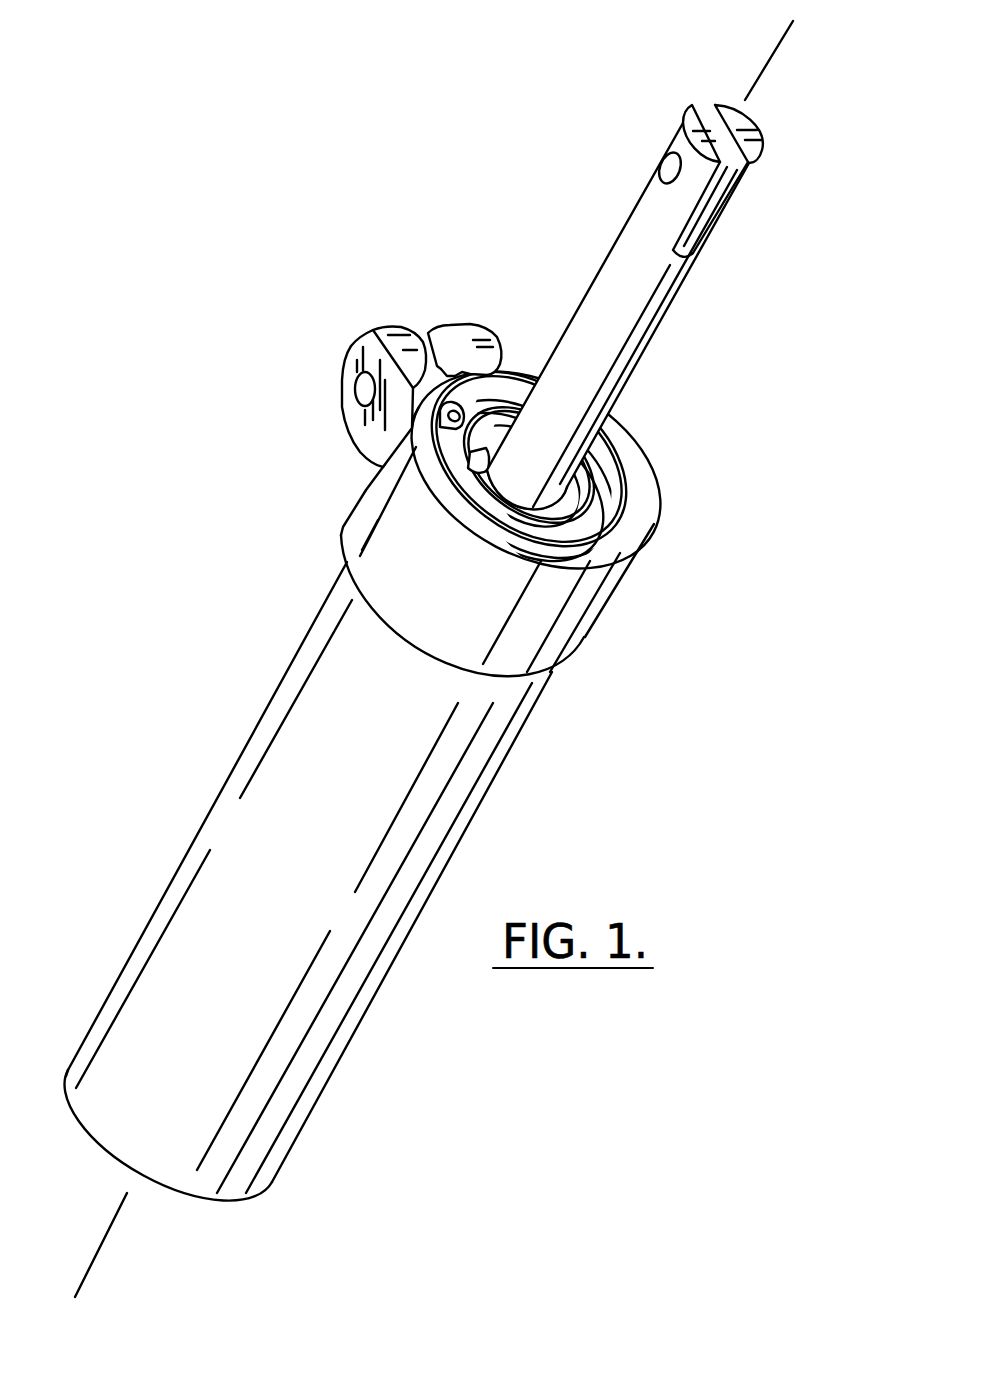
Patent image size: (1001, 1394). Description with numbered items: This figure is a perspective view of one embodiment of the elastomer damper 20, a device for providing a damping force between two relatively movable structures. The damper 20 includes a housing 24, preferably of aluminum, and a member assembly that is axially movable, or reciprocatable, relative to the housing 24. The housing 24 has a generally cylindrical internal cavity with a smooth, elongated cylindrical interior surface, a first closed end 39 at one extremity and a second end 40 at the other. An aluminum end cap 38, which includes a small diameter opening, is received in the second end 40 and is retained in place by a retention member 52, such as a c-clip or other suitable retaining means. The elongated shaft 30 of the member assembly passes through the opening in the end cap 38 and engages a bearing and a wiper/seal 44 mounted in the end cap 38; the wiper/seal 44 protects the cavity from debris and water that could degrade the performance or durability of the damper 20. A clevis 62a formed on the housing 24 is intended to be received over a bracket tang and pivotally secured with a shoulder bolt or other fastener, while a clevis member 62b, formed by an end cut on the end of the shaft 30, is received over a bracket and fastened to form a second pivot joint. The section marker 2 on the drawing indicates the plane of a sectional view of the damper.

The elastomer damper 20 is at (193, 643).
The housing 24 is at (201, 810).
The elongated shaft 30 is at (666, 337).
The end cap 38 is at (588, 525).
The first closed end 39 is at (58, 1061).
The second end 40 is at (626, 597).
The wiper/seal 44 is at (563, 513).
The retention member 52 is at (603, 477).
The clevis 62a is at (425, 316).
The clevis member 62b is at (644, 162).
The section line 2- 2 is at (762, 22).